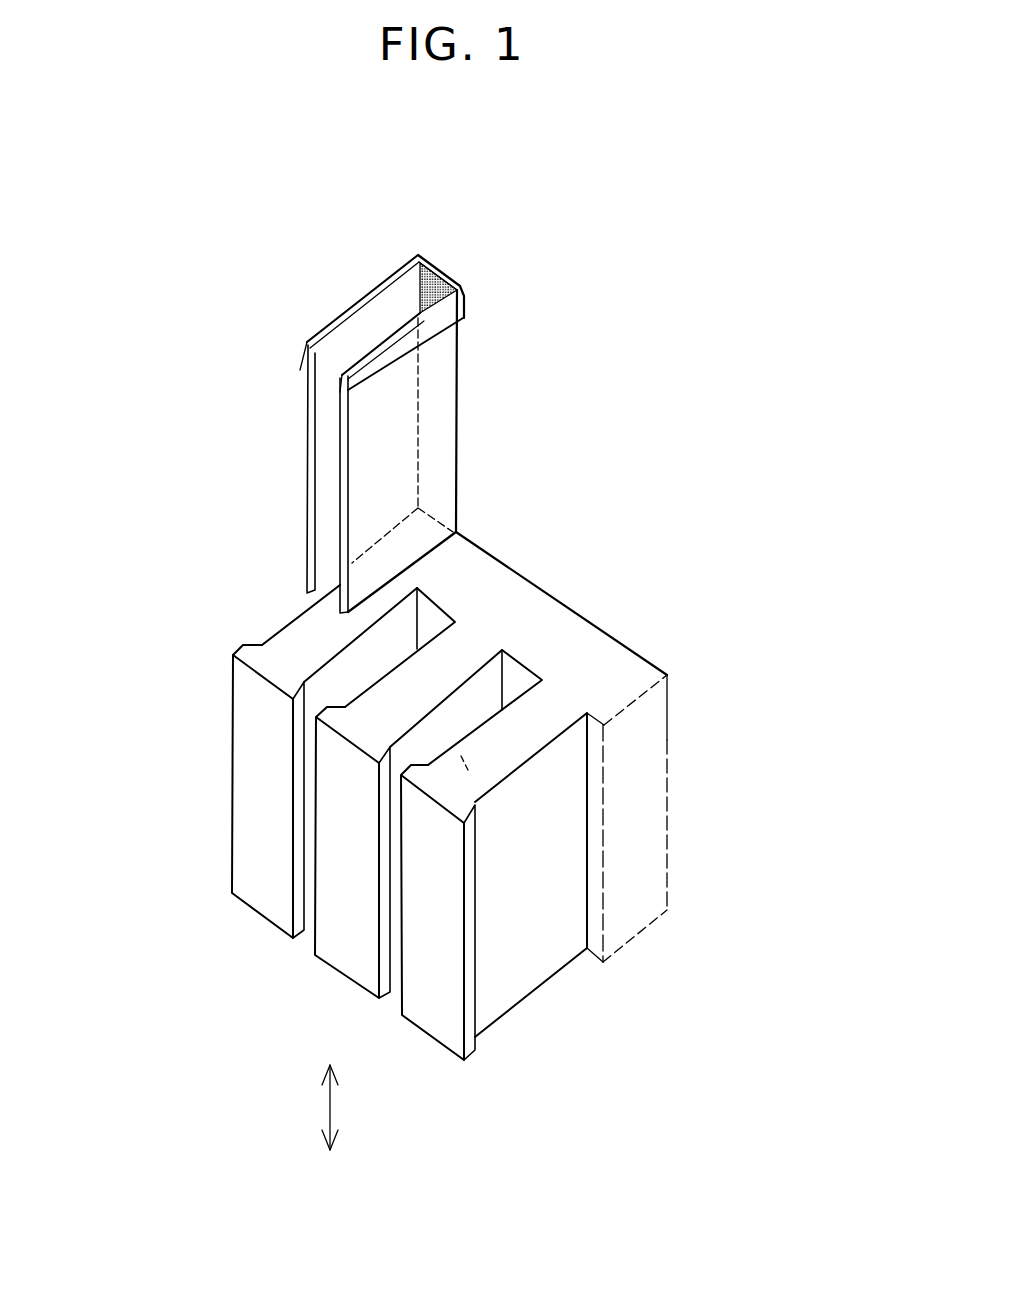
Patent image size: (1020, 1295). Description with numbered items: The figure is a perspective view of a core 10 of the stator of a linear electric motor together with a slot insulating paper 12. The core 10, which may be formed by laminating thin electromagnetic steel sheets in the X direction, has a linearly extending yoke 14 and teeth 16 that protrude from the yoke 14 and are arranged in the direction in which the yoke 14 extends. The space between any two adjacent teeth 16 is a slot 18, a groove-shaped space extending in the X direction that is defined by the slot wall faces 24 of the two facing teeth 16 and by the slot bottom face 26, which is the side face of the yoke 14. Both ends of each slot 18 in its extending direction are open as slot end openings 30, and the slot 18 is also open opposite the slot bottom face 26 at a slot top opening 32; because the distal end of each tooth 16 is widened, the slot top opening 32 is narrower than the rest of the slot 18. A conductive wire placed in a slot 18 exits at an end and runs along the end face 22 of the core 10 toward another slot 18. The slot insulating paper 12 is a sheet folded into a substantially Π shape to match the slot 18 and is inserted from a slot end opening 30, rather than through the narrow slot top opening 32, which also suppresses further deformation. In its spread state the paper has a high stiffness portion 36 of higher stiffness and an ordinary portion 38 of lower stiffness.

The core 10 is at (622, 483).
The slot insulating paper 12 is at (550, 290).
The yoke 14 is at (622, 668).
The teeth 16 is at (262, 873).
The slot 18 is at (352, 655).
The end face 22 is at (467, 560).
The slot wall faces 24 is at (512, 684).
The slot bottom face 26 is at (475, 690).
The slot end openings 30 is at (343, 690).
The slot top opening 32 is at (300, 812).
The high stiffness portion 36 is at (423, 275).
The ordinary portion 38 is at (368, 334).